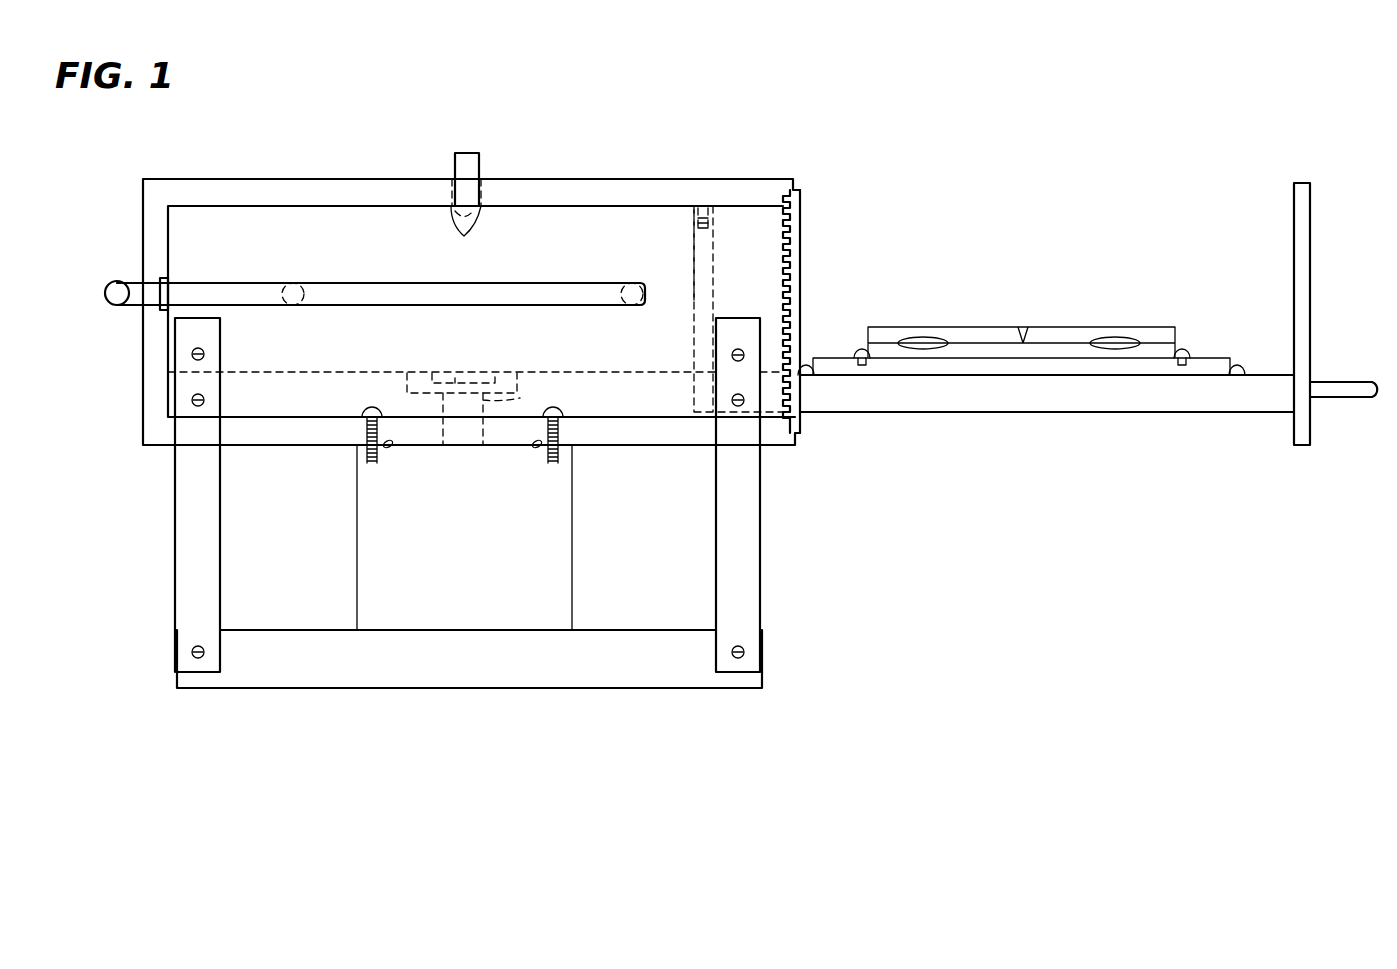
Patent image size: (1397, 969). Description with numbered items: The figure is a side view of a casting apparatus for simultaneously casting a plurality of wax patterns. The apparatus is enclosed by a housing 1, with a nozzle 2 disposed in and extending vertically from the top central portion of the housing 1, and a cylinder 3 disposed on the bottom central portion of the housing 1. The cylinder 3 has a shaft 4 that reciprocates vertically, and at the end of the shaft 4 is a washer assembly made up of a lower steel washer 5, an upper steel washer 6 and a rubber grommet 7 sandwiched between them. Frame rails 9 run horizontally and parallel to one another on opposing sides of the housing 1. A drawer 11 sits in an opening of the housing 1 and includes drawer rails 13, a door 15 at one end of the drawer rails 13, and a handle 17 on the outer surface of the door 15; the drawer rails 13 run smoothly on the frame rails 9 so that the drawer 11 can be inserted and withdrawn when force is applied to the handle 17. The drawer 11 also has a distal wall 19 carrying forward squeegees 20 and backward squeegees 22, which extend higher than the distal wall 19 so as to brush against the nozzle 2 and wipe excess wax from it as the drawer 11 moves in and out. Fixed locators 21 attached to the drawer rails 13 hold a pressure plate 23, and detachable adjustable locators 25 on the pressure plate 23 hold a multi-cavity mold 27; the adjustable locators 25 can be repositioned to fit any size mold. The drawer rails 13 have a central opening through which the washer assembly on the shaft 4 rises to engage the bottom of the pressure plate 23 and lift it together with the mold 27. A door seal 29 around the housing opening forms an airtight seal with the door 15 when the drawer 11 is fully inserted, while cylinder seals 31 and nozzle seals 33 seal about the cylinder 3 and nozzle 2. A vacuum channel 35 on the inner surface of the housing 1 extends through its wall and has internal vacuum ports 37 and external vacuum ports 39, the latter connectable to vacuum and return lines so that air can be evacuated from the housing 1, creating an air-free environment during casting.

The housing 1 is at (190, 178).
The nozzle 2 is at (464, 152).
The cylinder 3 is at (572, 523).
The shaft 4 is at (515, 413).
The lower steel washer 5 is at (415, 396).
The upper steel washer 6 is at (478, 371).
The rubber grommet 7 is at (407, 380).
The frame rails 9 is at (305, 371).
The drawer 11 is at (1310, 335).
The drawer rails 13 is at (968, 398).
The door 15 is at (1310, 245).
The handle 17 is at (1355, 397).
The distal wall 19 is at (716, 288).
The forward squeegees 20 is at (694, 222).
The fixed locators 21 is at (806, 363).
The backward squeegees 22 is at (713, 222).
The pressure plate 23 is at (1220, 358).
The adjustable locators 25 is at (862, 348).
The multi-cavity mold 27 is at (1110, 327).
The door seal 29 is at (800, 213).
The cylinder seals 31 is at (386, 450).
The nozzle seals 33 is at (465, 236).
The vacuum channel 35 is at (200, 282).
The internal vacuum ports 37 is at (297, 283).
The external vacuum ports 39 is at (105, 293).